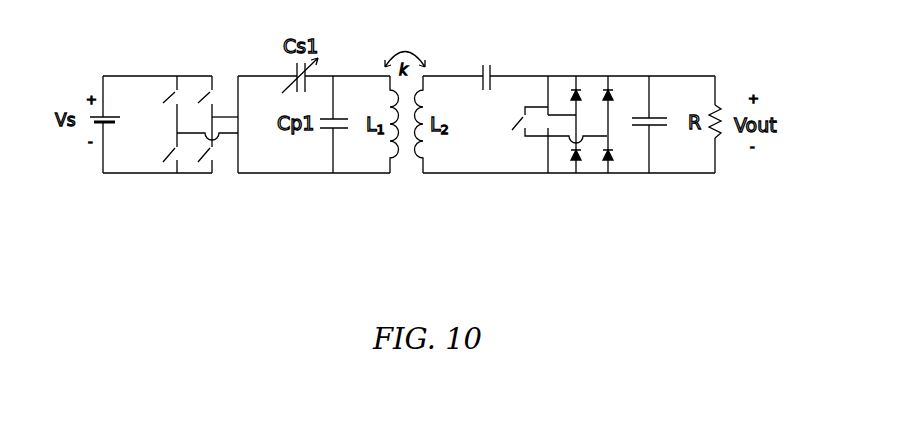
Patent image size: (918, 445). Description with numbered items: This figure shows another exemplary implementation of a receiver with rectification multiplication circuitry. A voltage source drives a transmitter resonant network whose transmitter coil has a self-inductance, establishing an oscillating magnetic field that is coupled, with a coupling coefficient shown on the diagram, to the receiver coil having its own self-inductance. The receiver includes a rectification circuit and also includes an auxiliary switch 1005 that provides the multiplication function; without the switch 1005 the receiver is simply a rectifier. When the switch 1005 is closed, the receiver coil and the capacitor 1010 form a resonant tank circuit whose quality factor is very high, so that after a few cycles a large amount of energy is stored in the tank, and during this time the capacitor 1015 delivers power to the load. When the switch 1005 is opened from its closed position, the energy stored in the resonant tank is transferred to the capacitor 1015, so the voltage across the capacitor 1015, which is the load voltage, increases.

The switch 1005 is at (537, 165).
The capacitor 1010 is at (505, 67).
The capacitor 1015 is at (660, 98).